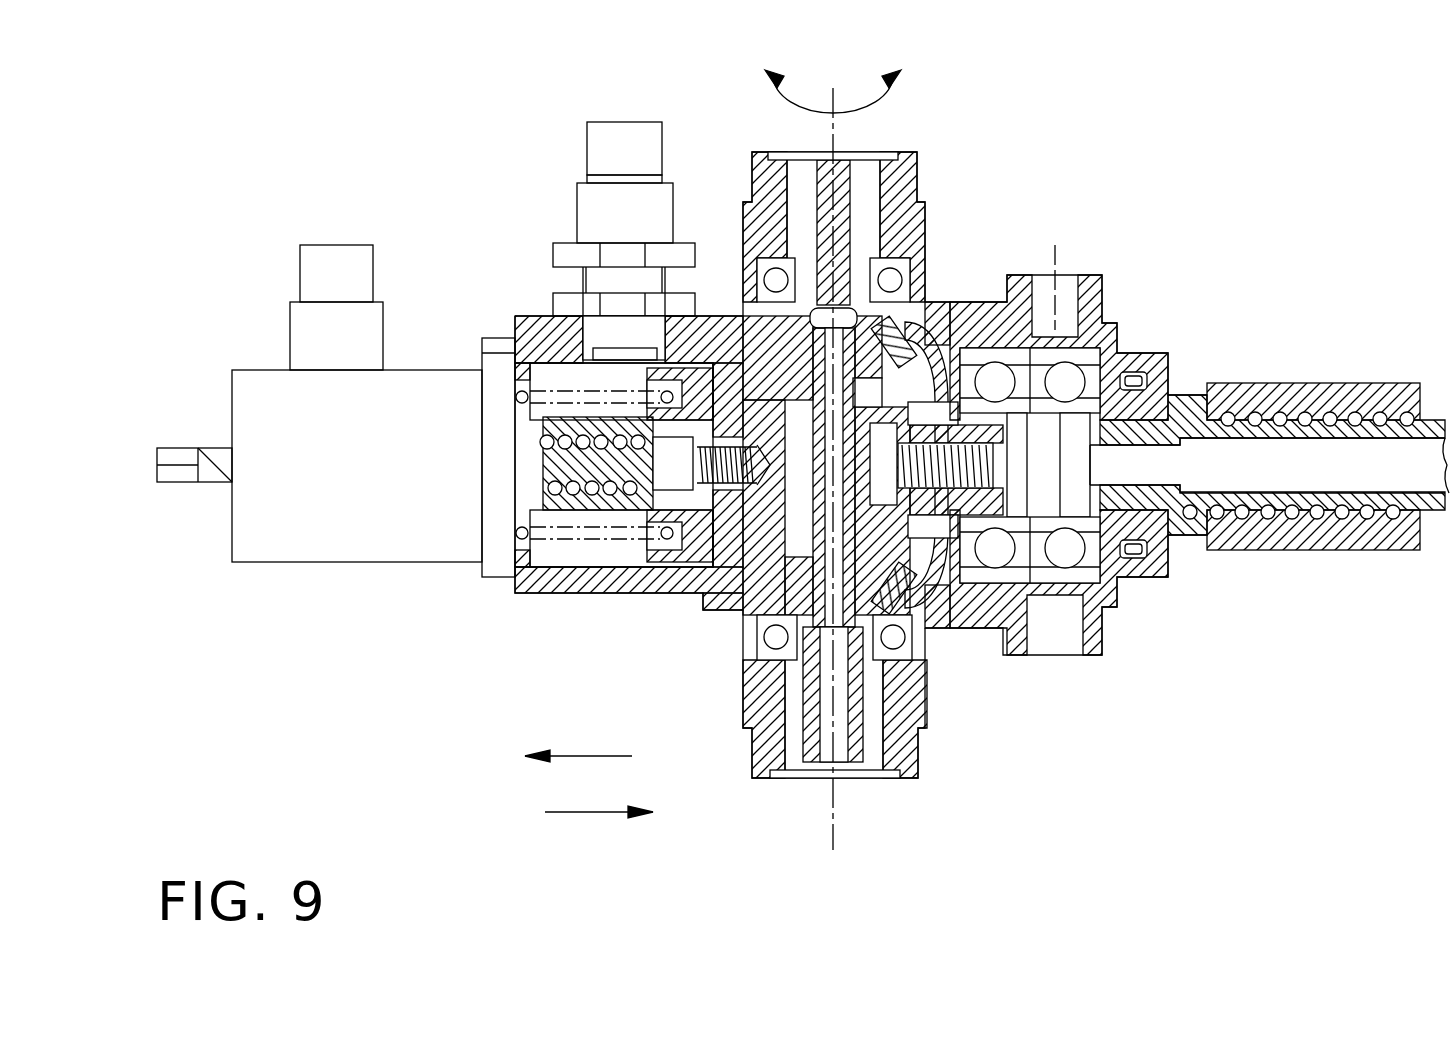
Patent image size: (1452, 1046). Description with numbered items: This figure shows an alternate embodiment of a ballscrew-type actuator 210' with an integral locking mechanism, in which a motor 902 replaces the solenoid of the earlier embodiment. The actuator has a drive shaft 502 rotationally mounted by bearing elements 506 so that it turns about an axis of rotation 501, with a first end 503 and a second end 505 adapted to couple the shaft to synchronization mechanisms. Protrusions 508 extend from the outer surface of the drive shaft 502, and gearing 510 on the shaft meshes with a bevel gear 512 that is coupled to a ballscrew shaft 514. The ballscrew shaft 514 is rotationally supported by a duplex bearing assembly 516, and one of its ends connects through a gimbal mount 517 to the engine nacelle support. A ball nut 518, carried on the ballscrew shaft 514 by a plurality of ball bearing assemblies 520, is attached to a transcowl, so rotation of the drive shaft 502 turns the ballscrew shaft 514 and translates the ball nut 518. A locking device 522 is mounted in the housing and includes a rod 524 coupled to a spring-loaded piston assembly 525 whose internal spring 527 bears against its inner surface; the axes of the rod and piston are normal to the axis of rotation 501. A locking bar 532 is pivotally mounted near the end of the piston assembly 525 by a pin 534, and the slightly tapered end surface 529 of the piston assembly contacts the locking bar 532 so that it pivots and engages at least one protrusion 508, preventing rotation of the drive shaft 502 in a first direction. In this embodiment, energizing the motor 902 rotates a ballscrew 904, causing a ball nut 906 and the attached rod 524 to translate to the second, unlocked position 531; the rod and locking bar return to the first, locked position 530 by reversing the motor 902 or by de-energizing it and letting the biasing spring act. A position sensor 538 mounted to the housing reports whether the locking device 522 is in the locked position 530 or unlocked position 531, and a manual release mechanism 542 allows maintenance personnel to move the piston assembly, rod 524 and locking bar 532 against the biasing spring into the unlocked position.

The actuator 210' is at (697, 405).
The motor 902 is at (342, 565).
The manual release mechanism 542 is at (177, 448).
The position sensor 538 is at (577, 214).
The locking device 522 is at (507, 312).
The pin 534 is at (703, 597).
The rod 524 is at (697, 440).
The end surface 529 is at (795, 450).
The piston assembly 525 is at (675, 537).
The ballscrew 904 is at (530, 445).
The ball nut 906 is at (550, 510).
The spring 527 is at (560, 470).
The drive shaft 502 is at (840, 192).
The second end 505 is at (855, 167).
The first end 503 is at (820, 763).
The axis of rotation 501 is at (845, 824).
The protrusions 508 is at (900, 385).
The bearing elements 506 is at (763, 658).
The bevel gear 512 is at (888, 340).
The locking bar 532 is at (800, 545).
The gearing 510 is at (900, 620).
The duplex bearing assembly 516 is at (1108, 338).
The gimbal mount 517 is at (1110, 630).
The ballscrew shaft 514 is at (1182, 440).
The ball bearing assemblies 520 is at (1355, 413).
The ball nut 518 is at (1340, 550).
The second, unlocked position 531 is at (590, 757).
The first, locked position 530 is at (585, 813).